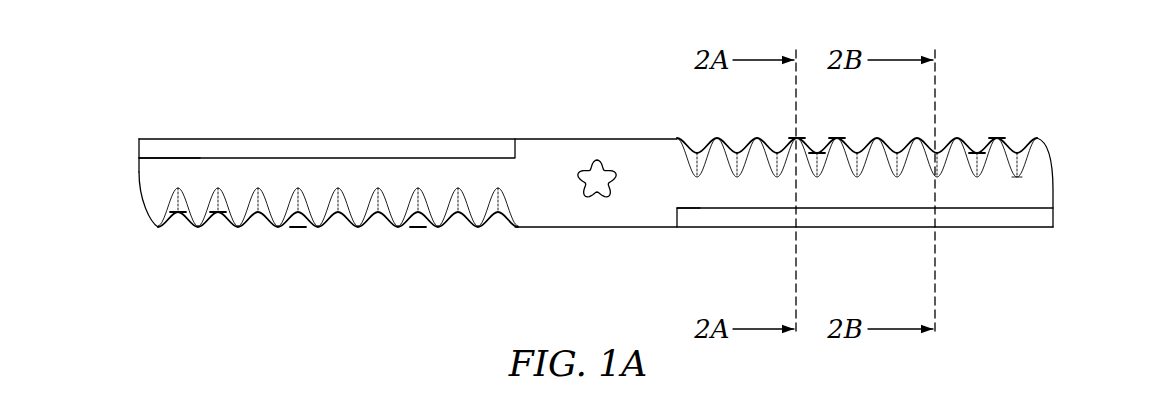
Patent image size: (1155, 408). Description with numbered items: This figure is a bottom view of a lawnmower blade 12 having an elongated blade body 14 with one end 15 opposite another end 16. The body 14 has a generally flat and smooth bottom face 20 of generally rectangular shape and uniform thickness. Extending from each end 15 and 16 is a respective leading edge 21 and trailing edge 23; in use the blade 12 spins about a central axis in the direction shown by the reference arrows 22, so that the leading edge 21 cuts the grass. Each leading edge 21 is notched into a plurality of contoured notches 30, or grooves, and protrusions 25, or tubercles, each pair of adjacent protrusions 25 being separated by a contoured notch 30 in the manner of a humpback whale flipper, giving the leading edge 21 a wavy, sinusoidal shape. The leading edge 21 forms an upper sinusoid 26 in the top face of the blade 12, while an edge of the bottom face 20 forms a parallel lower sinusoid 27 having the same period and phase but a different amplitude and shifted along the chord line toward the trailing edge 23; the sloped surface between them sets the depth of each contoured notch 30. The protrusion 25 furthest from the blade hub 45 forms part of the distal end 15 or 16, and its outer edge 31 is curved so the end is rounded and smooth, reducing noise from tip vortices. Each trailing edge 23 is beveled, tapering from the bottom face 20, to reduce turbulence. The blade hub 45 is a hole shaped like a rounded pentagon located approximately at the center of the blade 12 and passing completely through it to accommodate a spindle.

The lawnmower blade 12 is at (1068, 110).
The elongated blade body 14 is at (537, 139).
The end 15 is at (135, 148).
The end 16 is at (1058, 218).
The bottom face 20 is at (190, 158).
The leading edge 21 is at (176, 245).
The reference arrows 22 is at (257, 252).
The trailing edge 23 is at (263, 136).
The protrusions 25 is at (237, 230).
The upper sinusoid 26 is at (1005, 148).
The lower sinusoid 27 is at (1020, 171).
The contoured notches 30 is at (297, 223).
The outer edge 31 is at (135, 183).
The blade hub 45 is at (597, 200).